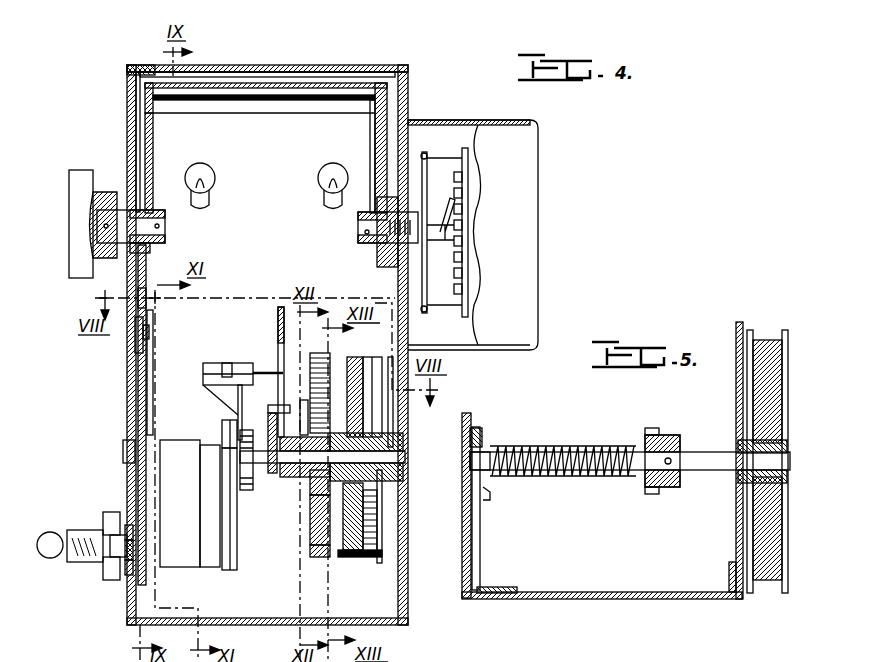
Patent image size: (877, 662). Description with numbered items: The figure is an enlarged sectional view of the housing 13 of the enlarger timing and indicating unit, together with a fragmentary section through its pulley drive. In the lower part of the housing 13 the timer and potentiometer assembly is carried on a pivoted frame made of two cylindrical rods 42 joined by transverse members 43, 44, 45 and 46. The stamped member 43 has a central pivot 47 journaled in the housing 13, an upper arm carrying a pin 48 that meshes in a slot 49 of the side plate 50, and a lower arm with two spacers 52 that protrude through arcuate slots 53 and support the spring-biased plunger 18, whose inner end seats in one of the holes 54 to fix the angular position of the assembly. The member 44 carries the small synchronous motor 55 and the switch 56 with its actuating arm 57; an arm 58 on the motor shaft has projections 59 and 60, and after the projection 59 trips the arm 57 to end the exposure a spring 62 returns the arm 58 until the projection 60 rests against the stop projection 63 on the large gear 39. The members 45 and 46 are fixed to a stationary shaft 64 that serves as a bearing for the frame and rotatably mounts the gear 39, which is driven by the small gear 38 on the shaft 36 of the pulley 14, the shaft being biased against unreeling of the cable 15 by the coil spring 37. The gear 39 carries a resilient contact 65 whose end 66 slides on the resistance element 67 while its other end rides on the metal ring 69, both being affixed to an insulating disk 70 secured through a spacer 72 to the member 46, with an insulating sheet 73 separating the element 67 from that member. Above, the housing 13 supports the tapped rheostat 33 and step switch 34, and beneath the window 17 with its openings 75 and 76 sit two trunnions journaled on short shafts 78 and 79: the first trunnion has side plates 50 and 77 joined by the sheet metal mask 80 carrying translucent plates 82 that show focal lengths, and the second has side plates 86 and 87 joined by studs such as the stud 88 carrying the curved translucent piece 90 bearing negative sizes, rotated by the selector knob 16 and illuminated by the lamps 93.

In FIG. 4, the housing 13 is at (408, 606).
In FIG. 5, the housing 13 is at (565, 599).
In FIG. 5, the pulley 14 is at (765, 583).
In FIG. 5, the cable 15 is at (765, 340).
In FIG. 4, the selector knob 16 is at (70, 208).
In FIG. 4, the window 17 is at (200, 70).
In FIG. 4, the spring-biased retractable plunger 18 is at (50, 530).
In FIG. 4, the tapped rheostat 33 is at (480, 338).
In FIG. 4, the step switch 34 is at (455, 208).
In FIG. 5, the shaft 36 is at (698, 472).
In FIG. 5, the coil spring 37 is at (560, 478).
In FIG. 5, the gear 38 is at (650, 435).
In FIG. 4, the larger gear 39 is at (310, 550).
In FIG. 4, the cylindrical rods 42 is at (160, 440).
In FIG. 4, the transverse member 43 is at (150, 377).
In FIG. 4, the second transverse member 44 is at (225, 556).
In FIG. 4, the transverse member 45 is at (278, 325).
In FIG. 4, the transverse member 46 is at (392, 410).
In FIG. 4, the pivot 47 is at (123, 450).
In FIG. 4, the pin 48 is at (140, 330).
In FIG. 4, the slot 49 is at (137, 300).
In FIG. 4, the side plate 50 is at (137, 125).
In FIG. 4, the spacers 52 is at (115, 512).
In FIG. 4, the arcuate slots 53 is at (130, 530).
In FIG. 4, the holes 54 is at (133, 548).
In FIG. 4, the synchronous motor 55 is at (180, 568).
In FIG. 4, the switch 56 is at (218, 363).
In FIG. 4, the actuating arm 57 is at (262, 372).
In FIG. 4, the arm 58 is at (250, 476).
In FIG. 4, the projection 59 is at (276, 405).
In FIG. 4, the projection 60 is at (300, 400).
In FIG. 4, the spring 62 is at (228, 423).
In FIG. 4, the stop projection 63 is at (312, 356).
In FIG. 4, the stationary shaft 64 is at (405, 460).
In FIG. 4, the resilient contact 65 is at (310, 482).
In FIG. 4, the contact end 66 is at (310, 510).
In FIG. 4, the resistance element 67 is at (350, 557).
In FIG. 4, the metal ring 69 is at (347, 375).
In FIG. 4, the insulating disk 70 is at (382, 518).
In FIG. 4, the spacer 72 is at (393, 443).
In FIG. 4, the insulating paper sheet 73 is at (385, 552).
In FIG. 4, the opening 75 is at (163, 67).
In FIG. 4, the opening 76 is at (310, 66).
In FIG. 4, the side plate 77 is at (387, 98).
In FIG. 4, the short shaft 78 is at (167, 228).
In FIG. 4, the short shaft 79 is at (358, 230).
In FIG. 4, the semi-cylindrical sheet metal part 80 is at (233, 100).
In FIG. 4, the translucent plastic plates 82 is at (162, 96).
In FIG. 4, the side plate 86 is at (145, 150).
In FIG. 4, the side plate 87 is at (370, 125).
In FIG. 4, the rectangular stud 88 is at (248, 113).
In FIG. 4, the translucent plastic piece 90 is at (340, 90).
In FIG. 4, the electric lamps 93 is at (318, 178).